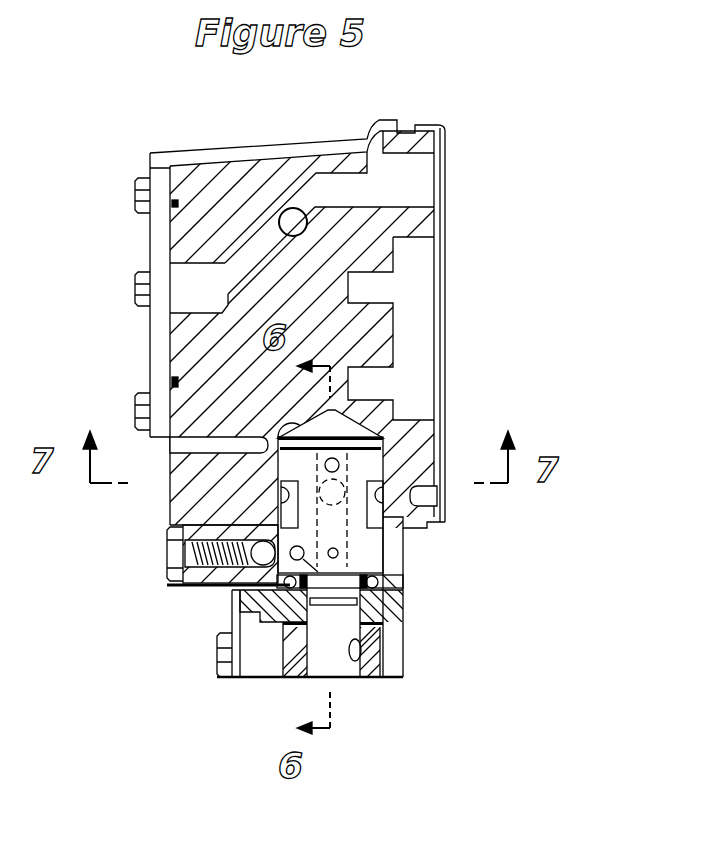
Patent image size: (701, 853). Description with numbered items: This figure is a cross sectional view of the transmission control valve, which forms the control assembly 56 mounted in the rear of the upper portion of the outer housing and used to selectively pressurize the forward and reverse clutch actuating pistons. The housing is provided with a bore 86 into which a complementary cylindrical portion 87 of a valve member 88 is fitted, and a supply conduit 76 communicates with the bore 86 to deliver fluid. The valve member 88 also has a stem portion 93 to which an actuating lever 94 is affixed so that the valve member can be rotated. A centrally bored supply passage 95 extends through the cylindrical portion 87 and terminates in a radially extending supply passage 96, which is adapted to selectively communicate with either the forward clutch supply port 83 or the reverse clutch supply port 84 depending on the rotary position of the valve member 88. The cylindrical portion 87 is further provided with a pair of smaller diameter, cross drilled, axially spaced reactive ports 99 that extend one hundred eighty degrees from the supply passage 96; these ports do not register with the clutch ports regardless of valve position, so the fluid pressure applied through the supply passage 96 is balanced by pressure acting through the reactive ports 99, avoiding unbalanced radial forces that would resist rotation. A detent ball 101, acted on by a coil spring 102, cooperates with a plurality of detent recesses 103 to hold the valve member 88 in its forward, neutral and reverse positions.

The control assembly 56 is at (262, 465).
The supply conduit 76 is at (292, 430).
The forward clutch supply port 83 is at (287, 484).
The reverse clutch supply port 84 is at (387, 522).
The bore 86 is at (390, 490).
The cylindrical portion 87 is at (303, 512).
The valve member 88 is at (360, 517).
The stem portion 93 is at (323, 655).
The actuating lever 94 is at (377, 647).
The supply passage 95 is at (350, 470).
The radially extending supply passage 96 is at (332, 505).
The reactive ports 99 is at (339, 458).
The detent ball 101 is at (237, 588).
The coil spring 102 is at (213, 590).
The detent recesses 103 is at (395, 600).